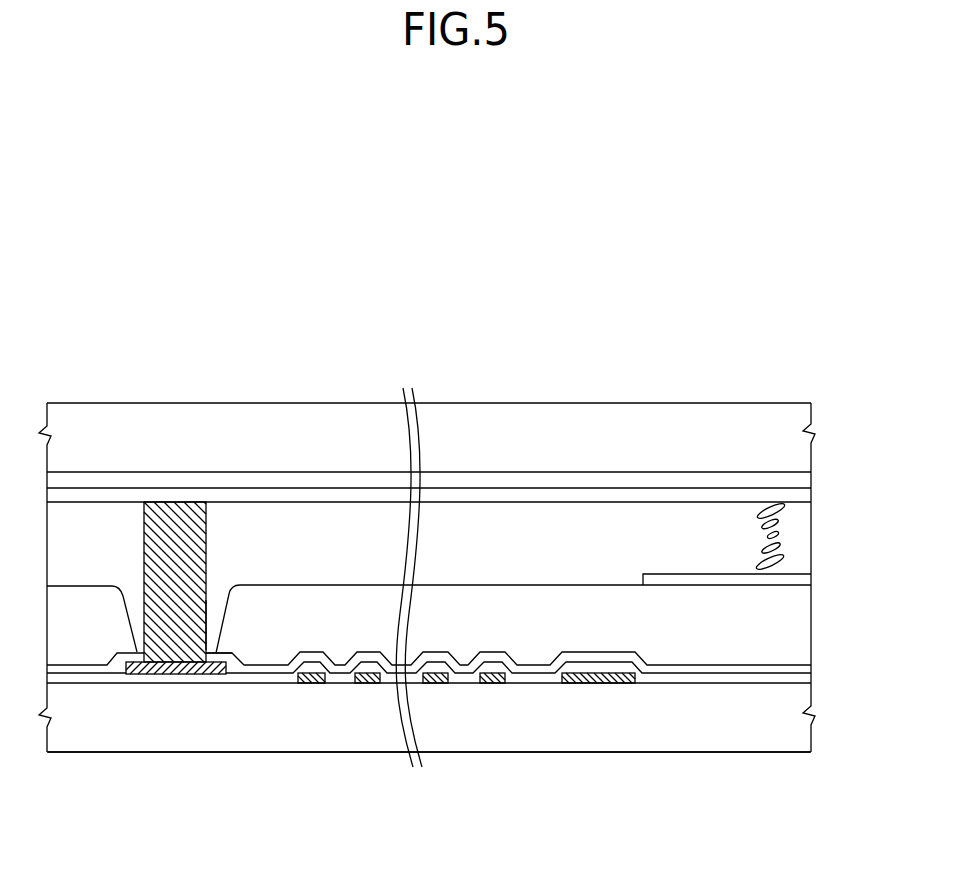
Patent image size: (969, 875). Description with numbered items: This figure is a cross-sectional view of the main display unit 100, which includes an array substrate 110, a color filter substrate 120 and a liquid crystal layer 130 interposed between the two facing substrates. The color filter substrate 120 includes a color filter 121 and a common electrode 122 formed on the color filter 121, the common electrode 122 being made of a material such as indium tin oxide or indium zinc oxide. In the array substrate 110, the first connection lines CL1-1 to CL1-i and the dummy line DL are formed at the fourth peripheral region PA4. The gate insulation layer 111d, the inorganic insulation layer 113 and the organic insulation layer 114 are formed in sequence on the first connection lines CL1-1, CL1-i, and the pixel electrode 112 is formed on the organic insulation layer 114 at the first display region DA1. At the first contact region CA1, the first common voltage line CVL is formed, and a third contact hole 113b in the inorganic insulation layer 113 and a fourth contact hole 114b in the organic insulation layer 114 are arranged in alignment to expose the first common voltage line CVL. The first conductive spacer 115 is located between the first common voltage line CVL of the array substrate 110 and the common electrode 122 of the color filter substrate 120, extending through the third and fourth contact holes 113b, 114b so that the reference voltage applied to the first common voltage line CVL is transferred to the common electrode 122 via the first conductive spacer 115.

The main display unit 100 is at (471, 340).
The array substrate 110 is at (820, 577).
The gate insulation layer 111d is at (738, 677).
The pixel electrode 112 is at (668, 574).
The inorganic insulation layer 113 is at (720, 666).
The third contact hole 113b is at (232, 647).
The organic insulation layer 114 is at (793, 598).
The fourth contact hole 114b is at (214, 606).
The first conductive spacer 115 is at (176, 526).
The color filter substrate 120 is at (820, 407).
The color filter 121 is at (282, 470).
The common electrode 122 is at (362, 490).
The liquid crystal layer 130 is at (768, 505).
The first contact region CA1 is at (227, 770).
The first connection line CL1-i is at (310, 686).
The first connection line CL1-1 is at (487, 688).
The first common voltage line CVL is at (210, 674).
The first display region DA1 is at (808, 770).
The dummy line DL is at (600, 688).
The fourth peripheral region PA4 is at (653, 770).